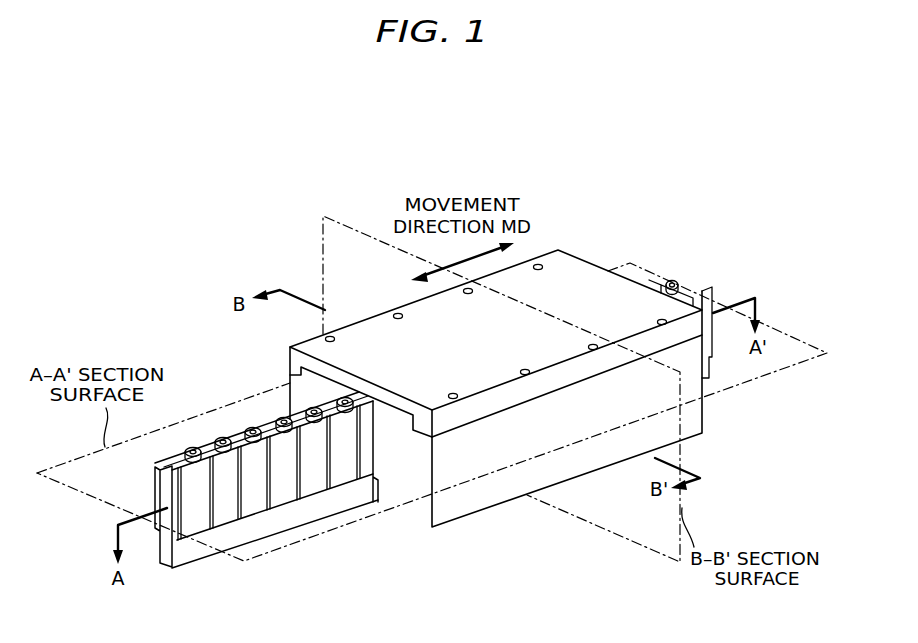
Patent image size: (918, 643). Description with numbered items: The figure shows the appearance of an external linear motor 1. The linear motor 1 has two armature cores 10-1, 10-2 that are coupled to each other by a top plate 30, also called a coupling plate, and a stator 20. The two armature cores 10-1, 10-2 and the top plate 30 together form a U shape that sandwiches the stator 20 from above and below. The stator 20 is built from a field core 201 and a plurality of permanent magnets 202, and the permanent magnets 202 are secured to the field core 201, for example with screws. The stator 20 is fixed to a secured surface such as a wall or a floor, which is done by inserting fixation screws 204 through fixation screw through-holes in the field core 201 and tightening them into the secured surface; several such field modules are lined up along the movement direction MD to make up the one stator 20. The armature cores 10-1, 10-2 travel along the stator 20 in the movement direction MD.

The linear motor 1 is at (552, 232).
The top plate 30 is at (582, 269).
The armature core 10-1 is at (472, 493).
The armature core 10-2 is at (297, 399).
The stator 20 is at (246, 556).
The field core 201 is at (297, 514).
The permanent magnet 202 is at (192, 524).
The fixation screw 204 is at (193, 446).